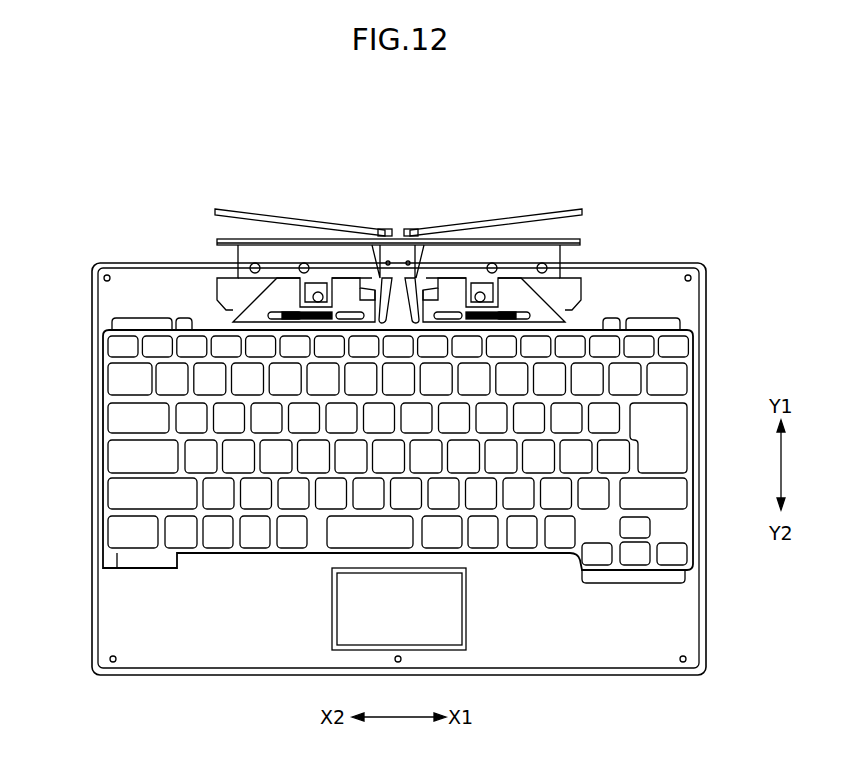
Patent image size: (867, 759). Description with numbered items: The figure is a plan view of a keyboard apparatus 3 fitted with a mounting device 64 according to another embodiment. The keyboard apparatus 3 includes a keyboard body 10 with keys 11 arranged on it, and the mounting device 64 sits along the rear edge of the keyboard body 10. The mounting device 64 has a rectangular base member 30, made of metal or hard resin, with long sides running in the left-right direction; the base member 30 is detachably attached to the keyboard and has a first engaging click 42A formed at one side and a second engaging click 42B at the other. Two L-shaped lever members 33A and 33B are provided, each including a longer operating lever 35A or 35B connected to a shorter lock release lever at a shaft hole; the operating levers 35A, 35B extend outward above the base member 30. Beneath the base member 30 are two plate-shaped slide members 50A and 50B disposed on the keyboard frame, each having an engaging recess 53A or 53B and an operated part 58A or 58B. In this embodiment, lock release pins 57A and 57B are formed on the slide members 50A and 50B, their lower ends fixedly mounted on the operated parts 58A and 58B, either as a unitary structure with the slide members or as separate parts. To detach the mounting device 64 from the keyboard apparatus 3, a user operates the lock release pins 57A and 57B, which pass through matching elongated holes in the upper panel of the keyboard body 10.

The keyboard apparatus 3 is at (416, 469).
The keyboard body 10 is at (130, 632).
The keys 11 is at (130, 455).
The base member 30 is at (398, 255).
The lever member 33A is at (514, 188).
The lever member 33B is at (283, 188).
The operating lever 35A is at (545, 213).
The operating lever 35B is at (253, 217).
The first engaging click 42A is at (480, 291).
The second engaging click 42B is at (318, 291).
The slide member 50A is at (563, 321).
The slide member 50B is at (235, 321).
The engaging recess 53A is at (486, 283).
The engaging recess 53B is at (312, 283).
The lock release pin 57A is at (434, 295).
The lock release pin 57B is at (362, 295).
The operated part 58A is at (426, 288).
The operated part 58B is at (372, 288).
The mounting device 64 is at (582, 237).